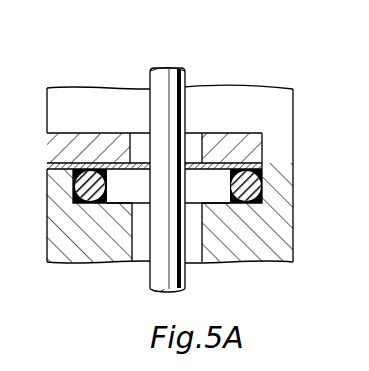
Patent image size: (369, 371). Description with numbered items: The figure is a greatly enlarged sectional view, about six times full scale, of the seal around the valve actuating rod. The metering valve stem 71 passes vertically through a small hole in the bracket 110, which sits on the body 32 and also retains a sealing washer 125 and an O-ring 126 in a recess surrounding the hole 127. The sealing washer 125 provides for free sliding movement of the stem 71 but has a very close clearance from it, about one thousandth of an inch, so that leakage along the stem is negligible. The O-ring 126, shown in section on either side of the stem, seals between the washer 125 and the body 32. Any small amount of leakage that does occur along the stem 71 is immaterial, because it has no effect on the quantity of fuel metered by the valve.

The metering valve stem 71 is at (168, 66).
The bracket 110 is at (112, 147).
The sealing washer 125 is at (98, 164).
The O-ring 126 is at (74, 194).
The body 32 is at (78, 233).
The hole 127 is at (134, 245).